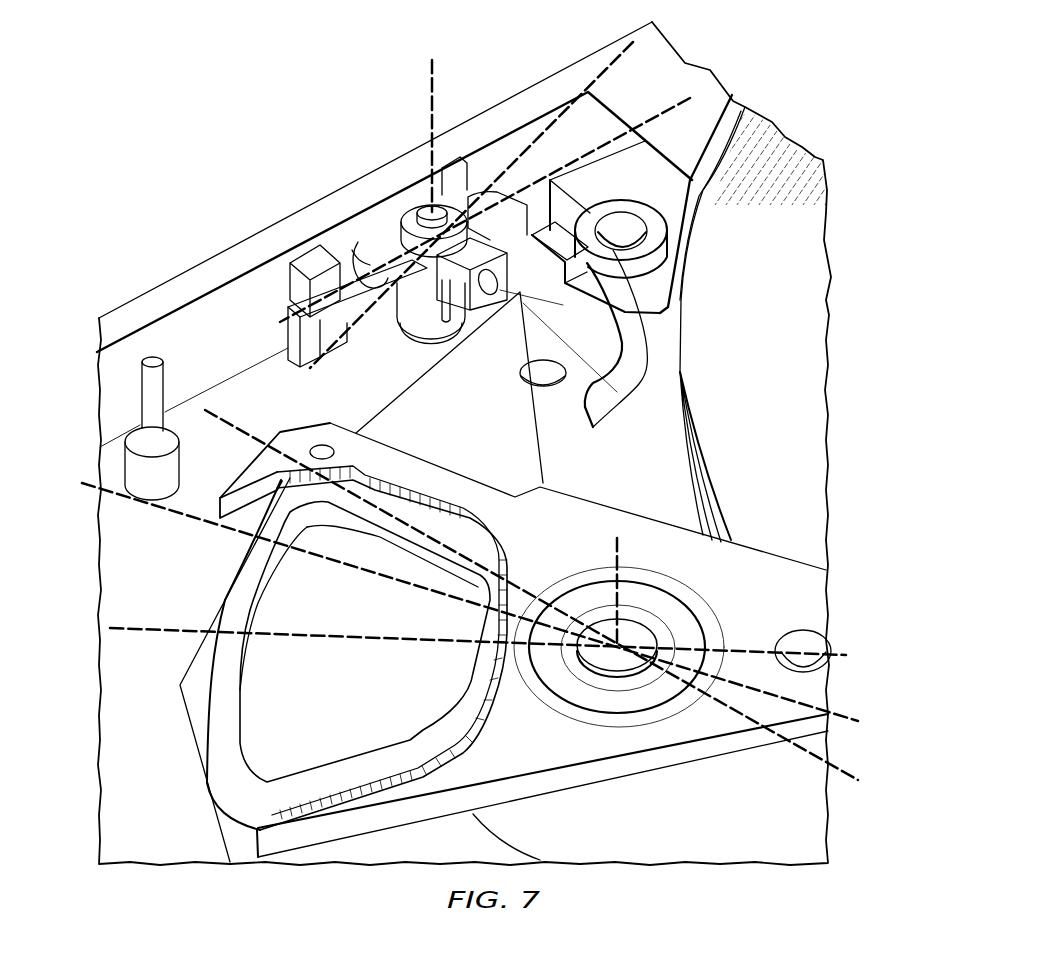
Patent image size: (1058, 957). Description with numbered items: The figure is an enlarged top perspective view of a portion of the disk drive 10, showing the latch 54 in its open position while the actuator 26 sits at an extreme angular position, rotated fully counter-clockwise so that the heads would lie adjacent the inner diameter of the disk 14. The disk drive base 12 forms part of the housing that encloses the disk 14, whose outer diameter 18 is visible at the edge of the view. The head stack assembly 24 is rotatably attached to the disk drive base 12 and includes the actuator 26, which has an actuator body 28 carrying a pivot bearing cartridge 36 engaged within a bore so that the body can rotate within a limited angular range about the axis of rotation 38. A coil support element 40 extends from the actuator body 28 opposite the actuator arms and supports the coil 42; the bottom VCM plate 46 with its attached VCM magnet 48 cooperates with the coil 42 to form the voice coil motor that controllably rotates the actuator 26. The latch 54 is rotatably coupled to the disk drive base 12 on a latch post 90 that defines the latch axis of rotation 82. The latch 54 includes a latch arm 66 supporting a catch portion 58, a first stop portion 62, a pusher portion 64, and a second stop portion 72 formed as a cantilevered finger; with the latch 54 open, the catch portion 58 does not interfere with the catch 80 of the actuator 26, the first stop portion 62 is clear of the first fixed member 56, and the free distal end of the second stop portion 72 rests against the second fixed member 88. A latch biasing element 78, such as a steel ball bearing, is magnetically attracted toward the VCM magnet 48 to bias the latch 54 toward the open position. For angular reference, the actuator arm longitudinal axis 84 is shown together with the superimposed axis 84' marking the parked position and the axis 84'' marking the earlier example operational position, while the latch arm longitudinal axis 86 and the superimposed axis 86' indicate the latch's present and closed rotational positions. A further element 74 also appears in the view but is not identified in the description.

The disk drive 10 is at (336, 77).
The disk drive base 12 is at (685, 62).
The disk 14 is at (770, 343).
The outer diameter 18 is at (715, 160).
The head stack assembly 24 is at (593, 740).
The actuator 26 is at (662, 730).
The actuator body 28 is at (703, 717).
The pivot bearing cartridge 36 is at (683, 637).
The axis of rotation 38 is at (620, 554).
The coil support element 40 is at (336, 840).
The coil 42 is at (227, 787).
The bottom VCM plate 46 is at (640, 396).
The VCM magnet 48 is at (473, 434).
The latch 54 is at (383, 211).
The first fixed member 56 is at (452, 157).
The catch portion 58 is at (287, 340).
The first stop portion 62 is at (470, 195).
The pusher portion 64 is at (430, 307).
The latch arm 66 is at (357, 253).
The second stop portion 72 is at (310, 286).
The cover plate 74 is at (160, 292).
The latch biasing element 78 is at (497, 290).
The catch 80 is at (247, 481).
The latch axis of rotation 82 is at (430, 76).
The actuator arm longitudinal axis 84 is at (478, 617).
The actuator arm longitudinal axis (parked position) 84' is at (531, 586).
The actuator arm longitudinal axis (example operational position) 84'' is at (470, 602).
The latch arm longitudinal axis 86 is at (485, 197).
The latch longitudinal axis (closed position) 86' is at (471, 193).
The second fixed member 88 is at (310, 265).
The latch post 90 is at (428, 210).